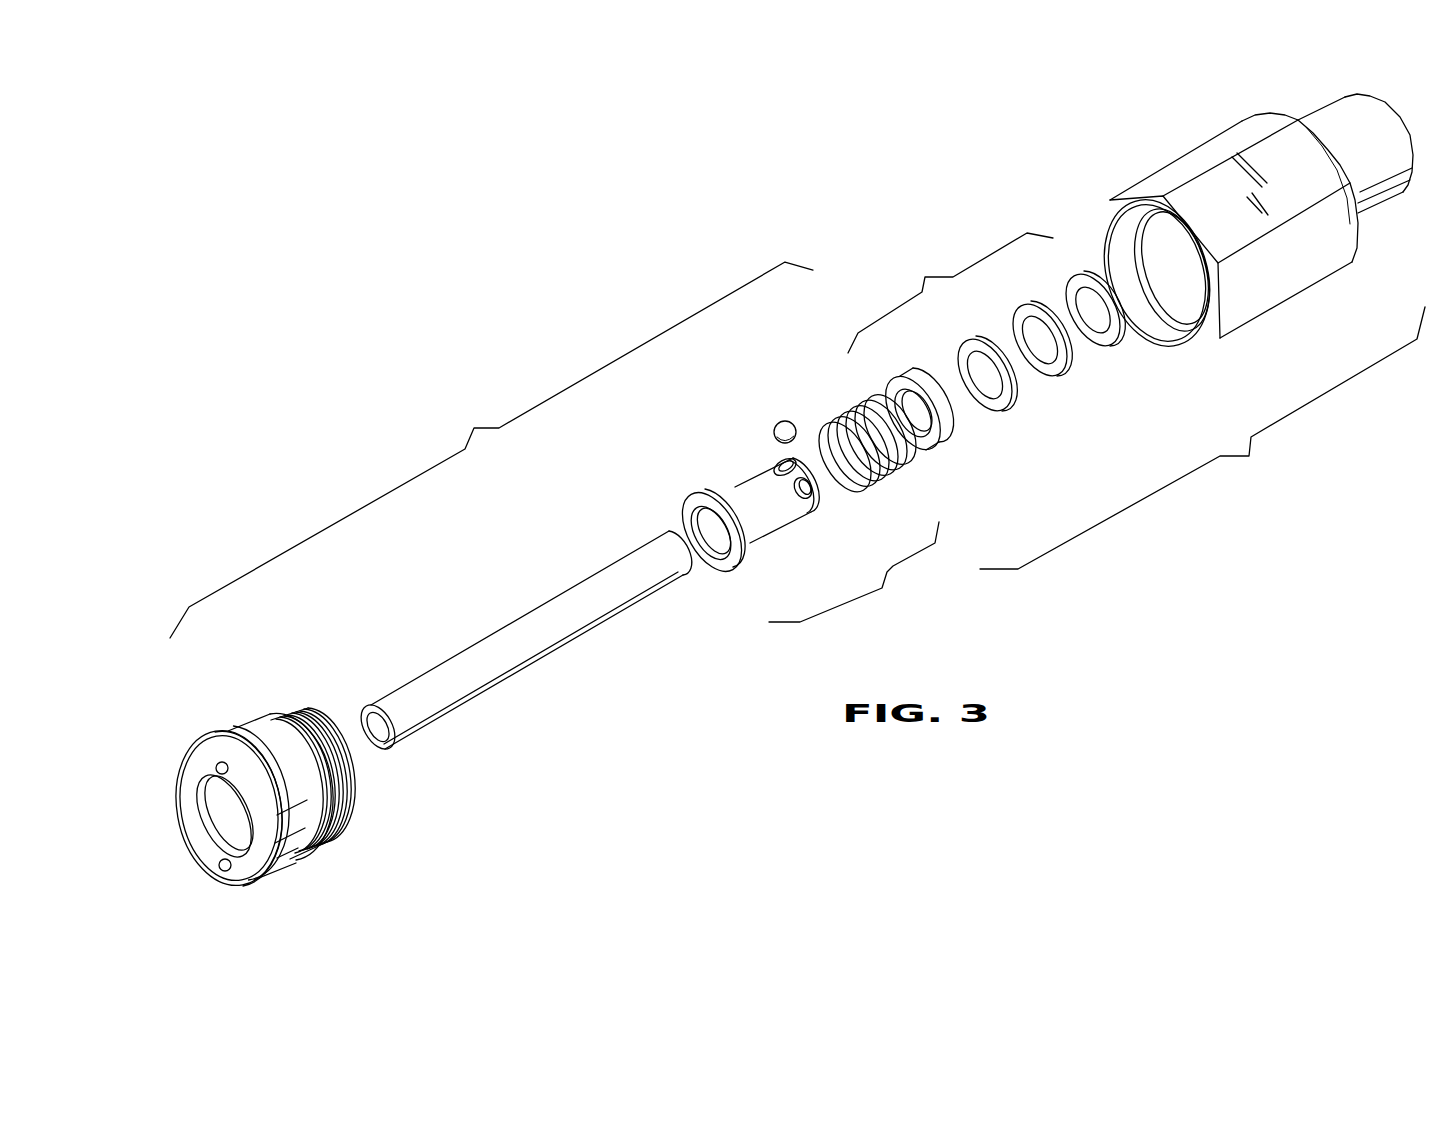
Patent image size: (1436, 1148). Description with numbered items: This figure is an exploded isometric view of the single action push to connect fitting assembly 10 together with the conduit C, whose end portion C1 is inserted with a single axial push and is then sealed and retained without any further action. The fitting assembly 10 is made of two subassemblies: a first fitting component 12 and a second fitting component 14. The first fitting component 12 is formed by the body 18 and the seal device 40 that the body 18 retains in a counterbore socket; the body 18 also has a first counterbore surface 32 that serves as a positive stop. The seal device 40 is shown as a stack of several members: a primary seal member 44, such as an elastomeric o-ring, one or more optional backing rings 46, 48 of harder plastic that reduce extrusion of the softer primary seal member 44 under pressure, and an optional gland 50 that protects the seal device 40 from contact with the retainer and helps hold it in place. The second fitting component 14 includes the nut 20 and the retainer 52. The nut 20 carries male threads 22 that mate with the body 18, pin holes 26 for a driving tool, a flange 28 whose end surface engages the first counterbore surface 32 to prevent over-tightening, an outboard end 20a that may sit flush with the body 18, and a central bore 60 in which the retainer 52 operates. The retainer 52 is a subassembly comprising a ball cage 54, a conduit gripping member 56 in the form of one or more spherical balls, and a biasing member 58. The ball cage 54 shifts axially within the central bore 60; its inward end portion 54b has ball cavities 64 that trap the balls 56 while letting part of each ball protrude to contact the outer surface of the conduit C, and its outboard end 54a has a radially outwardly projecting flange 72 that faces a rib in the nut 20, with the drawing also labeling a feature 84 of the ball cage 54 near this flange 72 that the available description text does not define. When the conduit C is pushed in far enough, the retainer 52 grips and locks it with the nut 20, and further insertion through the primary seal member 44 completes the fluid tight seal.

The fitting assembly 10 is at (690, 220).
The first fitting component 12 is at (1202, 438).
The second fitting component 14 is at (491, 450).
The body 18 is at (1250, 249).
The nut 20 is at (255, 784).
The outboard end of the nut 20a is at (253, 868).
The male threads 22 is at (332, 833).
The pin holes 26 is at (218, 765).
The flange 28 is at (230, 743).
The first counterbore surface 32 is at (1187, 308).
The seal device 40 is at (950, 293).
The primary seal member 44 is at (1108, 348).
The backing ring 46 is at (1053, 370).
The backing ring 48 is at (1008, 407).
The gland 50 is at (945, 438).
The retainer 52 is at (854, 572).
The ball cage 54 is at (760, 505).
The outboard end of the ball cage 54a is at (728, 567).
The inward end portion of the ball cage 54b is at (822, 500).
The conduit gripping member 56 is at (782, 420).
The biasing member 58 is at (890, 477).
The central bore 60 is at (228, 820).
The ball cavities 64 is at (784, 459).
The flange 72 is at (706, 500).
The insert flange face 84 is at (678, 528).
The conduit C is at (543, 643).
The end portion of the conduit C1 is at (683, 580).